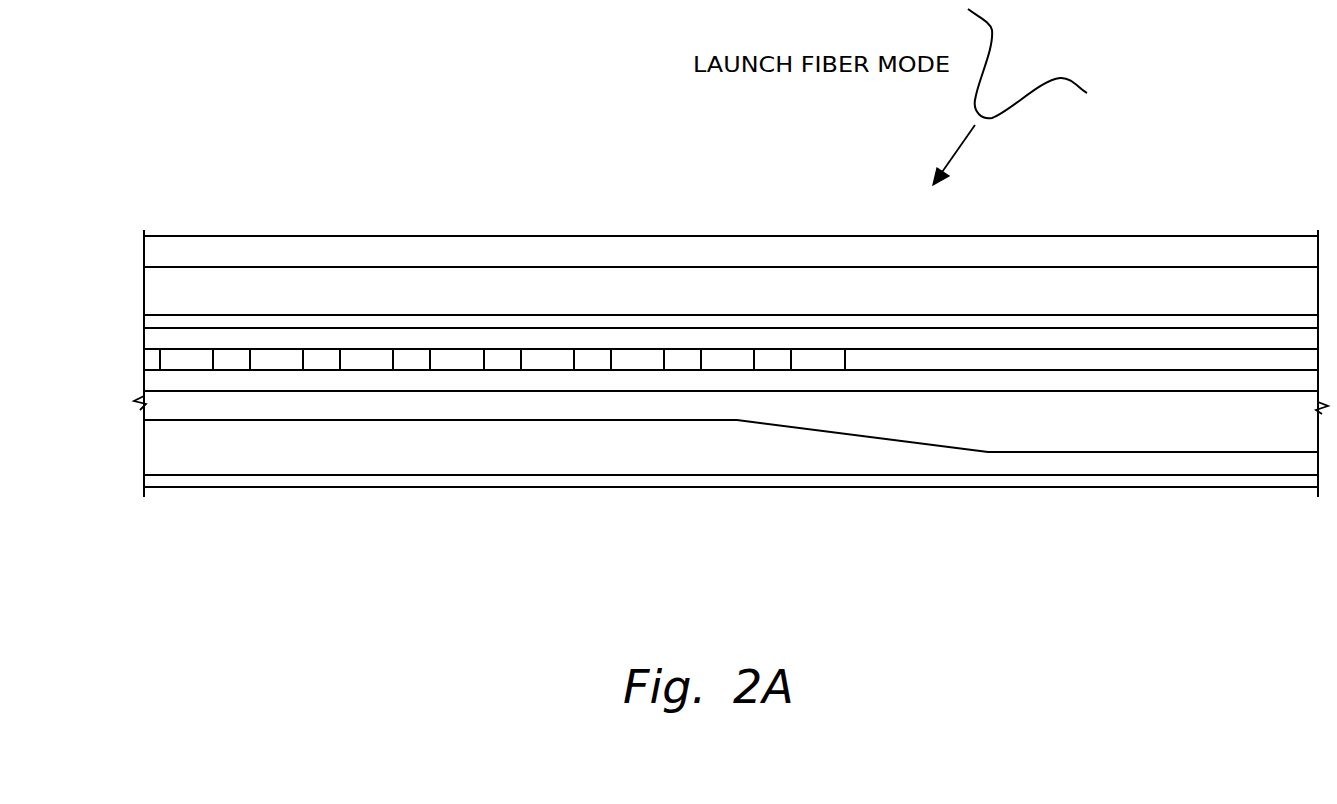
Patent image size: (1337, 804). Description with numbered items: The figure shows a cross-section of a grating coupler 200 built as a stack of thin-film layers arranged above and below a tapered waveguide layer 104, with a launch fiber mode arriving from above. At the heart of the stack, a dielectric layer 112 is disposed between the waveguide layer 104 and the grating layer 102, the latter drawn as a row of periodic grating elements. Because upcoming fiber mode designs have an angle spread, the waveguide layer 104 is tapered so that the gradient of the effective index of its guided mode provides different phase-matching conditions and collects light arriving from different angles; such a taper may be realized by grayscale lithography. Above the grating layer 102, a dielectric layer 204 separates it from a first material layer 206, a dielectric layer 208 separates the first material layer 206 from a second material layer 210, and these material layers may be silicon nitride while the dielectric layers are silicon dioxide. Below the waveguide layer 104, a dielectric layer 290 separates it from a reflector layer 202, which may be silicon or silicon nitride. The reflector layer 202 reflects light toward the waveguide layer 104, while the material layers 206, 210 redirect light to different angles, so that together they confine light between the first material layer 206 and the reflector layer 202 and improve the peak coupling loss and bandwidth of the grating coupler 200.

The grating coupler 200 is at (132, 148).
The grating layer 102 is at (123, 343).
The waveguide layer 104 is at (214, 403).
The dielectric layer 112 is at (302, 392).
The reflector layer 202 is at (370, 480).
The dielectric layer 204 is at (263, 341).
The first material layer 206 is at (346, 322).
The dielectric layer 208 is at (428, 293).
The second material layer 210 is at (512, 255).
The dielectric layer 290 is at (456, 448).